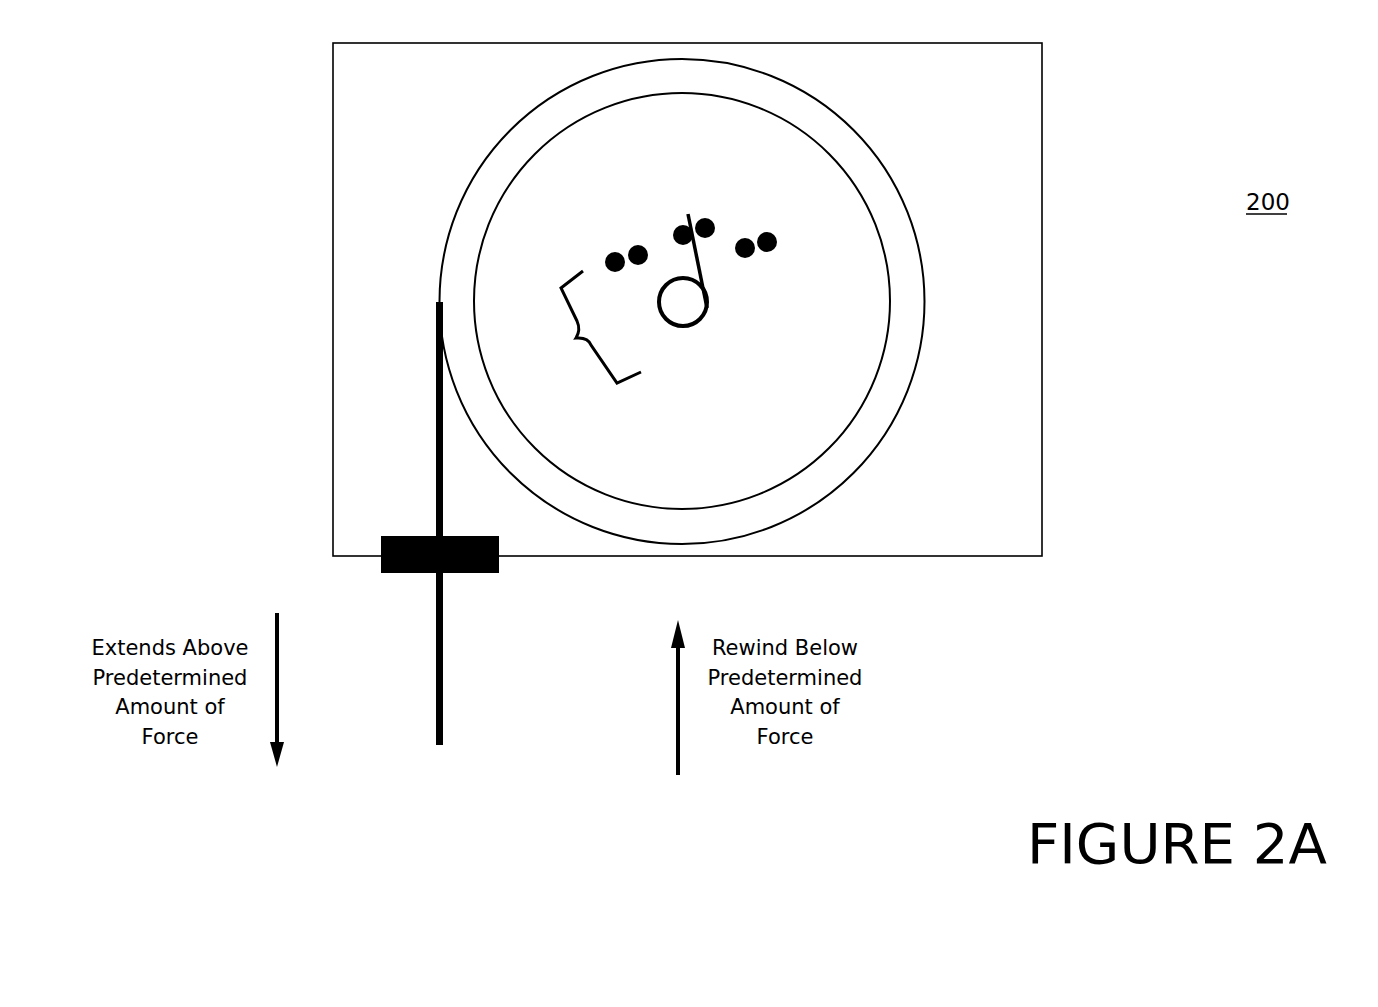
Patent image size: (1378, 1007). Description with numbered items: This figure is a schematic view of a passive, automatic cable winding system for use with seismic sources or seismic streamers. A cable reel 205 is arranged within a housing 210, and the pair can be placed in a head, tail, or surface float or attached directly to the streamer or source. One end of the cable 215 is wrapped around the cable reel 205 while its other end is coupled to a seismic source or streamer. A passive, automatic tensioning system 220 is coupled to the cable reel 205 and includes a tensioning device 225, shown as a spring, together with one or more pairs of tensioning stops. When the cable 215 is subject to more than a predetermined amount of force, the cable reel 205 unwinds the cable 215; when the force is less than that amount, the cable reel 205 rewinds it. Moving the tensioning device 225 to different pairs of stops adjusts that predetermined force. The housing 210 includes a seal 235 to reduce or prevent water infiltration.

The cable reel 205 is at (865, 462).
The housing 210 is at (1042, 435).
The cable 215 is at (443, 663).
The passive, automatic tensioning system 220 is at (577, 338).
The tensioning device 225 is at (703, 287).
The seal 235 is at (488, 573).